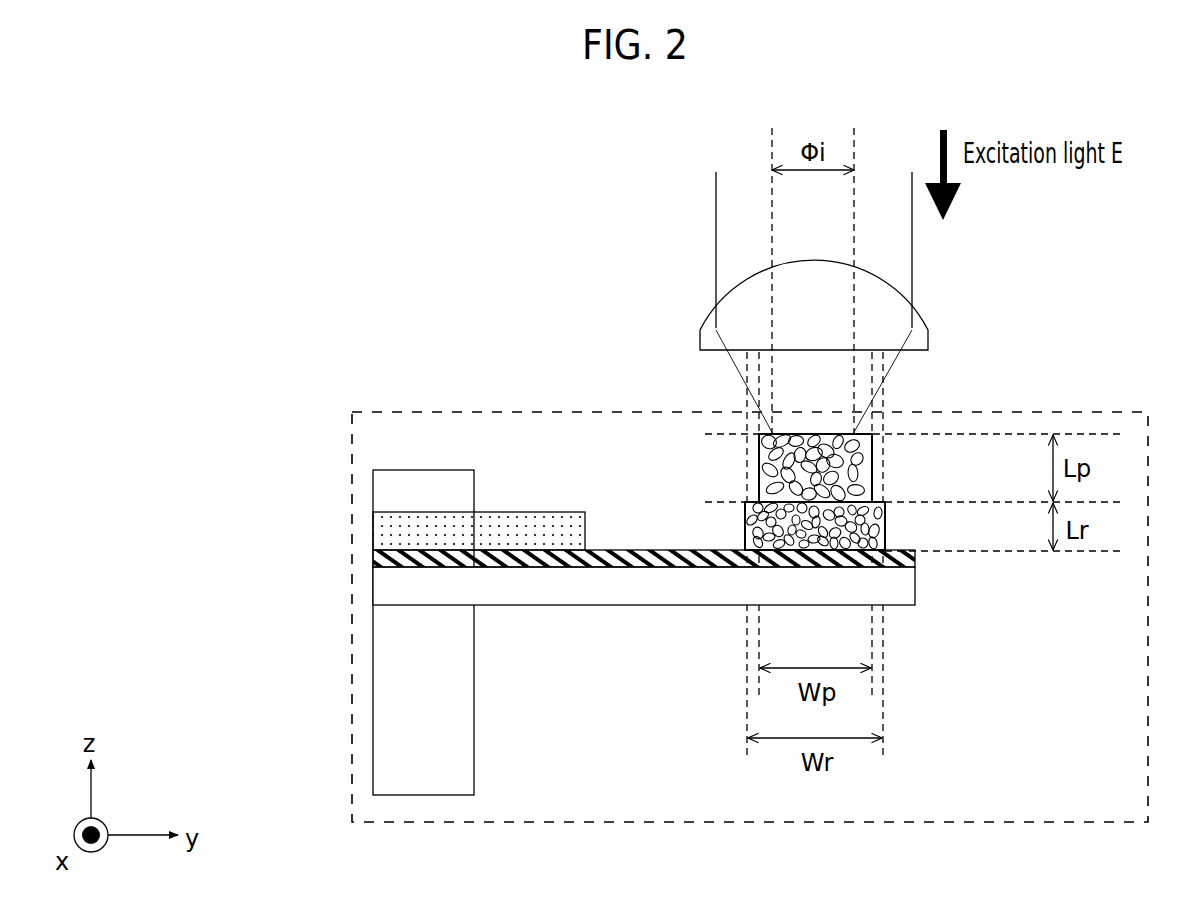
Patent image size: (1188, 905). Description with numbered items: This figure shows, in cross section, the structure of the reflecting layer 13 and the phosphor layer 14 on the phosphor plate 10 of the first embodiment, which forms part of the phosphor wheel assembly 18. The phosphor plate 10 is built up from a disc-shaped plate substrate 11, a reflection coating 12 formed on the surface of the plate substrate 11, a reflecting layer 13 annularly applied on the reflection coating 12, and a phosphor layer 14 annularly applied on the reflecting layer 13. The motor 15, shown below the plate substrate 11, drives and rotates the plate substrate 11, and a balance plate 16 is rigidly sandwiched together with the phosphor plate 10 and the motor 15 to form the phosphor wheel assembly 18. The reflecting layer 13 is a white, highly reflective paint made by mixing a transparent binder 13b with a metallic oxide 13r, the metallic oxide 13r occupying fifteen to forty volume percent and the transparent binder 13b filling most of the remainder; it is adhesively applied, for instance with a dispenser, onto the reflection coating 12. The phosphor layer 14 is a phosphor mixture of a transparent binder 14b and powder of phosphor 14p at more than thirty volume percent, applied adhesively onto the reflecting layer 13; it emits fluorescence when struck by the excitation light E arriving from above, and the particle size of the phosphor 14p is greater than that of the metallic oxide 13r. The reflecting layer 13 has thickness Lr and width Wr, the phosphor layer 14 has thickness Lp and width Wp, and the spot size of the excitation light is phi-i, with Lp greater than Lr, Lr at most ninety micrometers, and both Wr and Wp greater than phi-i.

The phosphor plate 10 is at (587, 488).
The plate substrate 11 is at (373, 572).
The reflection coating 12 is at (373, 560).
The reflecting layer 13 is at (746, 537).
The metallic oxide 13r is at (885, 527).
The transparent binder 13b is at (886, 562).
The phosphor layer 14 is at (759, 468).
The transparent binder 14b is at (872, 438).
The phosphor 14p is at (872, 472).
The motor 15 is at (474, 697).
The balance plate 16 is at (373, 530).
The phosphor wheel assembly 18 is at (432, 411).